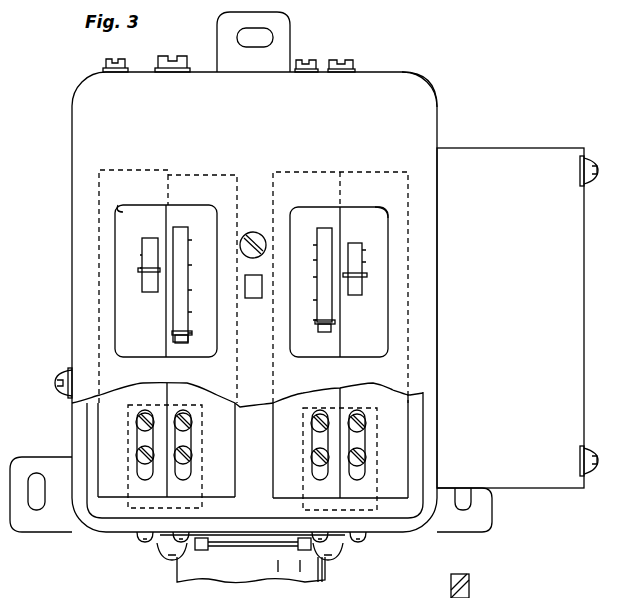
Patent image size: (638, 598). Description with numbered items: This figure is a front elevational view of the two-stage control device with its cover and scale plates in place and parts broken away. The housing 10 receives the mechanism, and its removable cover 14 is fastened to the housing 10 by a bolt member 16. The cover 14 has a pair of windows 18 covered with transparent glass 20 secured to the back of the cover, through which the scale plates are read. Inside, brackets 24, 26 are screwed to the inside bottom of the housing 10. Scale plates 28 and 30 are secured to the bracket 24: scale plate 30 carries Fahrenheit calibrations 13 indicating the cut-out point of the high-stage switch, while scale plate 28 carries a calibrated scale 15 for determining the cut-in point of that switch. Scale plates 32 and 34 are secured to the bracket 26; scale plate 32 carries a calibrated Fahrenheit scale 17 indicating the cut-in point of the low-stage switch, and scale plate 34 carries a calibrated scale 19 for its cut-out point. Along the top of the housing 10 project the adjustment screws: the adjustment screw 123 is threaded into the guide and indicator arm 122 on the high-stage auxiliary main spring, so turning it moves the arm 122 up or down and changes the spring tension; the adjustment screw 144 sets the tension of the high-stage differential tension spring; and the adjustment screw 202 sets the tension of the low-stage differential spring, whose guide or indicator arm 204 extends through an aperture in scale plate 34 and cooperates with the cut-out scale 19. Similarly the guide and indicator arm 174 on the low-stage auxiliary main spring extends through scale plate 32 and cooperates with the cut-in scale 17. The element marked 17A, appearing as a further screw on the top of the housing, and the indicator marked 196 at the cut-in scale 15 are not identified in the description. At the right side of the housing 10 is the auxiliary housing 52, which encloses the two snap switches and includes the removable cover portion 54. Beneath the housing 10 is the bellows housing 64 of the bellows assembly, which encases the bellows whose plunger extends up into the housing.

The housing 10 is at (85, 133).
The Fahrenheit calibrations 13 is at (207, 278).
The removable cover 14 is at (430, 113).
The calibrated scale 15 is at (118, 270).
The bolt member 16 is at (257, 231).
The calibrated Fahrenheit scale 17 is at (295, 290).
The terminal 17A is at (314, 62).
The windows 18 is at (128, 208).
The calibrated scale 19 is at (382, 267).
The glass 20 is at (150, 360).
The bracket 24 is at (128, 500).
The bracket 26 is at (305, 503).
The scale plate 28 is at (105, 420).
The scale plate 30 is at (253, 440).
The scale plate 32 is at (283, 437).
The scale plate 34 is at (398, 430).
The auxiliary housing 52 is at (604, 283).
The removable cover portion 54 is at (553, 218).
The bellows housing 64 is at (318, 568).
The guide and indicator arm 122 is at (182, 343).
The adjustment screw 123 is at (173, 58).
The adjustment screw 144 is at (127, 60).
The guide and indicator arm 174 is at (325, 333).
The differential adjusting knob 196 is at (148, 276).
The adjustment screw 202 is at (348, 60).
The guide or indicator arm 204 is at (360, 283).